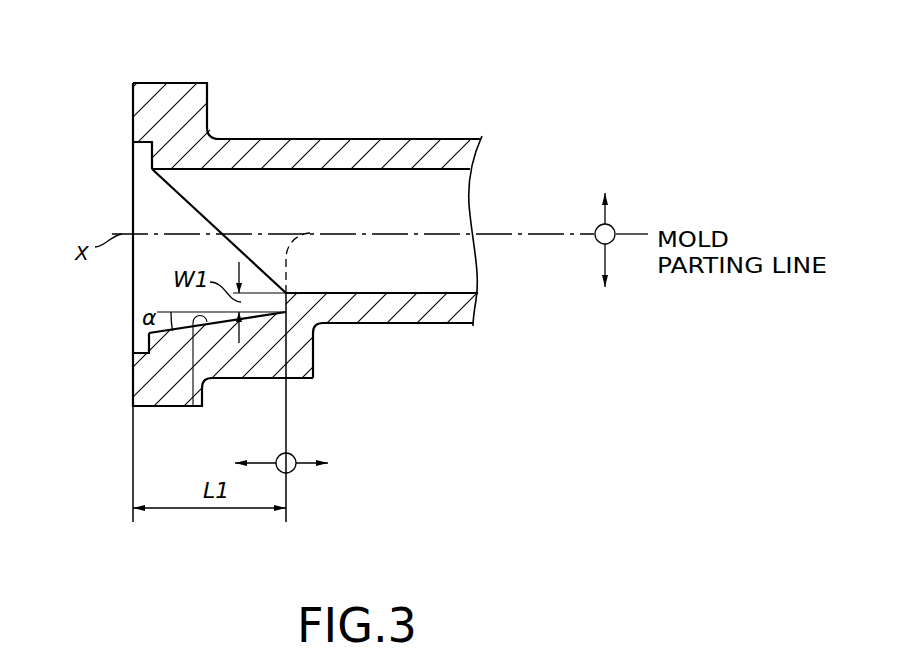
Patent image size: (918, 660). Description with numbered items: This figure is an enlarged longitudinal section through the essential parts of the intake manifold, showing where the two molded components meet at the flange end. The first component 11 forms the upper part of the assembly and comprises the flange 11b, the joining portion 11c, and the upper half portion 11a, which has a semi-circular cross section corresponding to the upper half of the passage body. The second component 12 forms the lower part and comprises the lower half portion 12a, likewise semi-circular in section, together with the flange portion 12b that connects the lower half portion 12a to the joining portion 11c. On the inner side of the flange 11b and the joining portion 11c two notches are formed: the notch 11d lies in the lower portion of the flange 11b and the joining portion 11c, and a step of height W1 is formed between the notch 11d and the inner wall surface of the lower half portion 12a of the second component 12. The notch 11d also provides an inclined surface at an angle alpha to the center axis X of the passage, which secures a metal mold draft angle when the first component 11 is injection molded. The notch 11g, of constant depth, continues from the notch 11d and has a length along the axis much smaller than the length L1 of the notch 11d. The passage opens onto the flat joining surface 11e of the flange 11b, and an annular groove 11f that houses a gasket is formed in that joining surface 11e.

The first component 11 is at (420, 102).
The upper half portion 11a is at (166, 182).
The flange 11b is at (176, 92).
The joining portion 11c is at (252, 379).
The notch 11d is at (193, 407).
The joining surface 11e is at (133, 117).
The annular groove 11f is at (134, 153).
The notch 11g is at (147, 287).
The second component 12 is at (426, 375).
The lower half portion 12a is at (436, 295).
The flange portion 12b is at (313, 366).